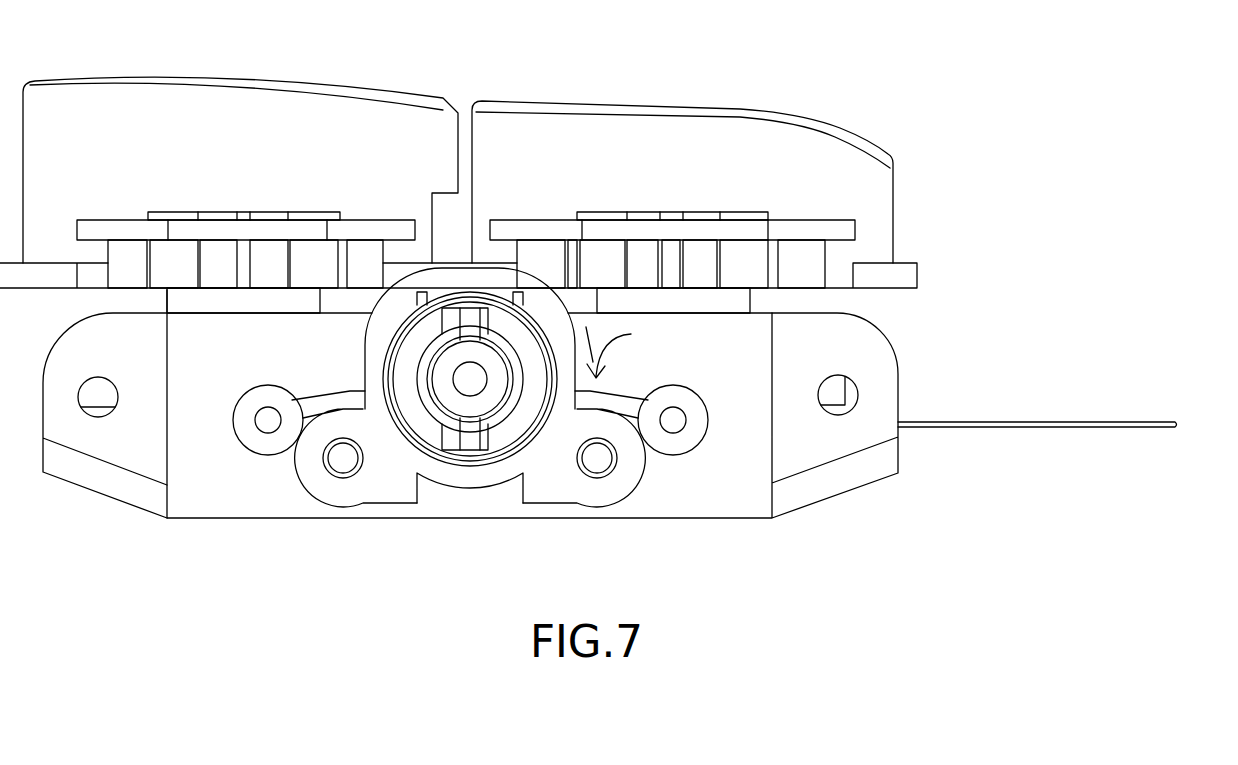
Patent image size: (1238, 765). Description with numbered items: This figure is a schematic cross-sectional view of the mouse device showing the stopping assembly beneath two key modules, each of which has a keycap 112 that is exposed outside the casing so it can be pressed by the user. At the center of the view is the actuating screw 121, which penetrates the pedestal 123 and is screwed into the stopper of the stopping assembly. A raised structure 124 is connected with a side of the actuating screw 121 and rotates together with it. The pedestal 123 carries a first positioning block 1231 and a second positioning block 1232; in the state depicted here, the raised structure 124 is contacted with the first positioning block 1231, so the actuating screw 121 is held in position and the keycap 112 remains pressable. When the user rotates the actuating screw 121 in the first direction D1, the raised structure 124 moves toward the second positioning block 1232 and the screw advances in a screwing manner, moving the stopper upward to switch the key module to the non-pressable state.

The keycap 112 is at (233, 114).
The actuating screw 121 is at (467, 405).
The pedestal 123 is at (587, 488).
The first positioning block 1231 is at (450, 322).
The second positioning block 1232 is at (450, 440).
The raised structure 124 is at (475, 320).
The first direction D1 is at (627, 348).